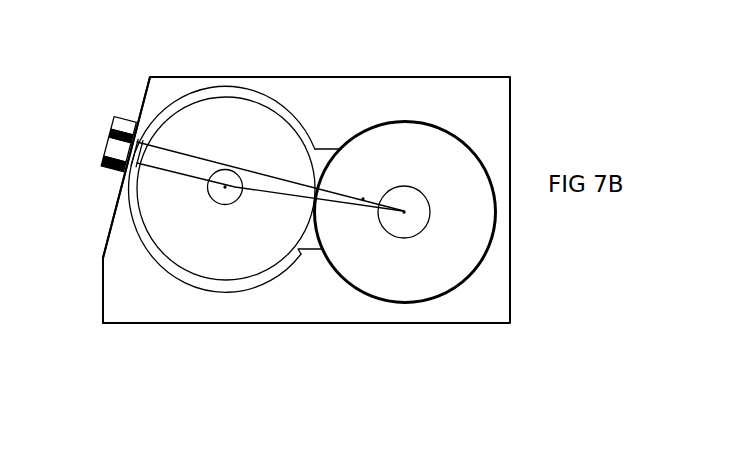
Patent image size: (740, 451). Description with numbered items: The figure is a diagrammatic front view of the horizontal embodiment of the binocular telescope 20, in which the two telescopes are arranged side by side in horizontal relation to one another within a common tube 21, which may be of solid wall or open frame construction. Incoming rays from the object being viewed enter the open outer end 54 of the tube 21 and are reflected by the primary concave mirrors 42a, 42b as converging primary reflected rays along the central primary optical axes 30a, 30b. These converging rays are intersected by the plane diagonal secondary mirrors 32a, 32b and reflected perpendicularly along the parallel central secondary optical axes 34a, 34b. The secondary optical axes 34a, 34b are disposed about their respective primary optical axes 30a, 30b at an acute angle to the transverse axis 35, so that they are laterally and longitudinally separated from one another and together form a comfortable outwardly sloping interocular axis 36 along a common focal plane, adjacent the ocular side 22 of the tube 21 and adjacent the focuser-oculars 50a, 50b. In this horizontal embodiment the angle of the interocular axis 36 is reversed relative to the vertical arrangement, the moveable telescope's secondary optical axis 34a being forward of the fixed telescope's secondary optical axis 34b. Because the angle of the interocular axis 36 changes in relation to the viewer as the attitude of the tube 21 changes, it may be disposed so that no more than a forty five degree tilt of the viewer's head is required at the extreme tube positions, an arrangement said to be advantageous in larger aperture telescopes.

The assembly 20 is at (380, 73).
The tube 21 is at (482, 87).
The ocular side 22 is at (146, 92).
The central primary optical axis 30a is at (224, 198).
The central primary optical axis 30b is at (402, 226).
The plane diagonal secondary mirror 32a is at (255, 158).
The plane diagonal secondary mirror 32b is at (438, 213).
The central secondary optical axis 34a is at (153, 170).
The central secondary optical axis 34b is at (373, 187).
The transverse axis 35 is at (262, 197).
The interocular axis 36 is at (150, 163).
The primary concave mirror 42a is at (262, 260).
The primary concave mirror 42b is at (358, 153).
The focuser-ocular 50a is at (100, 168).
The focuser-ocular 50b is at (115, 127).
The open outer end 54 is at (205, 289).